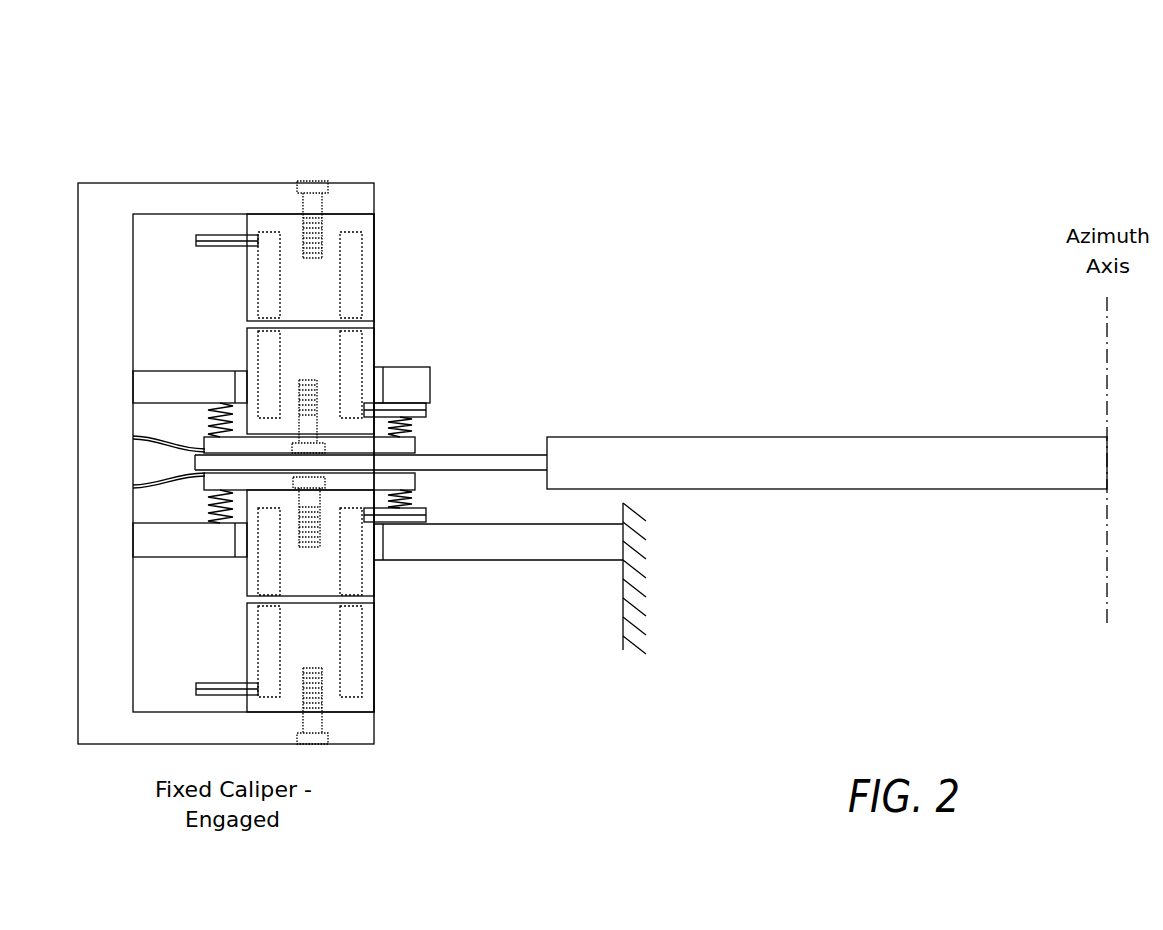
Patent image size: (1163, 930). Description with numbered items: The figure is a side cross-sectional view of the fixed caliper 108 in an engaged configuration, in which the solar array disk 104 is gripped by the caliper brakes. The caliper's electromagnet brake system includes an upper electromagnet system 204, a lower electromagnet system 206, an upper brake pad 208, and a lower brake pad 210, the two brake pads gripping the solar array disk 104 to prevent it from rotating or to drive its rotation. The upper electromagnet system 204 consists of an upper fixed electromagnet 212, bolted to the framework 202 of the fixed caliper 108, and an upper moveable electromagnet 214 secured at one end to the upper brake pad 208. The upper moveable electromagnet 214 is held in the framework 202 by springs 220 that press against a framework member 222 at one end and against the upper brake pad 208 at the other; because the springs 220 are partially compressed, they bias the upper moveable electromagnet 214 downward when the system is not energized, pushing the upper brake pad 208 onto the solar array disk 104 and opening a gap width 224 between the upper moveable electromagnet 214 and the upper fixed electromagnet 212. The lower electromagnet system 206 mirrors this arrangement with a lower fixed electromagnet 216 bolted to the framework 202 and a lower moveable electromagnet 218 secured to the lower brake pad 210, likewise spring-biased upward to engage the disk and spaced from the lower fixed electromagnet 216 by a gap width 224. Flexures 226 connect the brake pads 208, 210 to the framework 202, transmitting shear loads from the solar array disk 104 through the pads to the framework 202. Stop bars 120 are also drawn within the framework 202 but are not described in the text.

The fixed caliper 108 is at (435, 97).
The framework 202 is at (148, 197).
The upper electromagnet system 204 is at (514, 245).
The lower electromagnet system 206 is at (514, 608).
The upper fixed electromagnet 212 is at (357, 263).
The upper moveable electromagnet 214 is at (355, 342).
The lower fixed electromagnet 216 is at (357, 667).
The lower moveable electromagnet 218 is at (350, 568).
The stop bar 120 is at (218, 246).
The framework member 222 is at (197, 378).
The springs 220 is at (210, 413).
The gap width 224 is at (246, 327).
The flexures 226 is at (187, 475).
The upper brake pad 208 is at (410, 448).
The lower brake pad 210 is at (412, 480).
The solar array disk 104 is at (793, 450).